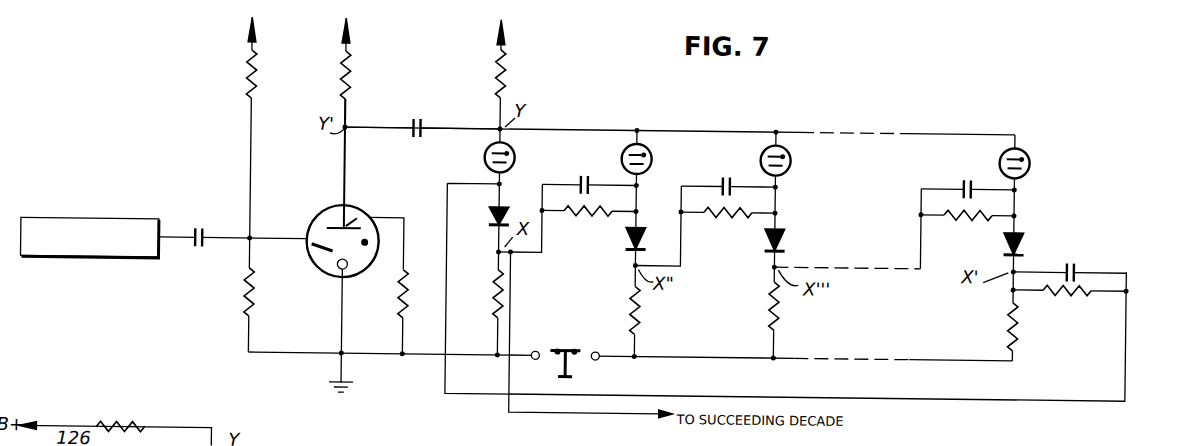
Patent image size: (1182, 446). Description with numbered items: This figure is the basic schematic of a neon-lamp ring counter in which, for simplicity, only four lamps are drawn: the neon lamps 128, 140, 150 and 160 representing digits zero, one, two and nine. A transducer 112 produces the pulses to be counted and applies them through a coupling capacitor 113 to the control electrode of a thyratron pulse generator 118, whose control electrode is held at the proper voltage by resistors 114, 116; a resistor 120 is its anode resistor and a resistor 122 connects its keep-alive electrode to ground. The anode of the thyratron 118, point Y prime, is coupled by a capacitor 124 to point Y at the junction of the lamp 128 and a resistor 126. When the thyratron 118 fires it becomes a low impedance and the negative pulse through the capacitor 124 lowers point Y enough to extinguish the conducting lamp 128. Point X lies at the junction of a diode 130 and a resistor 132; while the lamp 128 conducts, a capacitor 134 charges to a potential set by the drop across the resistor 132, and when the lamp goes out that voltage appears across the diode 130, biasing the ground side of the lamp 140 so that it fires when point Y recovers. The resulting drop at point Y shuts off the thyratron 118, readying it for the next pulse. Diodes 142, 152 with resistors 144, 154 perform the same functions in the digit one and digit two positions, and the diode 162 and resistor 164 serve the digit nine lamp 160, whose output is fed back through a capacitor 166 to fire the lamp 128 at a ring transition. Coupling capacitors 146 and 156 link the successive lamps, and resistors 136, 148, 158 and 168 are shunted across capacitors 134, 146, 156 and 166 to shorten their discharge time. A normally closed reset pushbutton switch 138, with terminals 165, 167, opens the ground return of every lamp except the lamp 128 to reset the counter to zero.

The transducer 112 is at (140, 215).
The coupling capacitor 113 is at (206, 230).
The resistor 114 is at (253, 70).
The resistor 116 is at (256, 295).
The thyratron pulse generator 118 is at (312, 264).
The anode resistor 120 is at (350, 78).
The resistor 122 is at (403, 300).
The capacitor 124 is at (412, 118).
The resistor 126 is at (503, 76).
The neon lamp 128 is at (485, 154).
The diode 130 is at (487, 217).
The resistor 132 is at (492, 292).
The capacitor 134 is at (580, 173).
The resistor 136 is at (595, 212).
The reset pushbutton switch 138 is at (569, 341).
The neon lamp 140 is at (650, 160).
The diode 142 is at (623, 241).
The resistor 144 is at (633, 290).
The coupling capacitor 146 is at (718, 180).
The resistor 148 is at (748, 217).
The neon lamp 150 is at (792, 159).
The diode 152 is at (765, 239).
The resistor 154 is at (770, 295).
The coupling capacitor 156 is at (962, 182).
The resistor 158 is at (978, 220).
The neon lamp 160 is at (1030, 159).
The diode 162 is at (1022, 231).
The resistor 164 is at (1010, 310).
The terminal 165 is at (545, 337).
The capacitor 166 is at (1075, 258).
The terminal 167 is at (610, 337).
The resistor 168 is at (1062, 287).